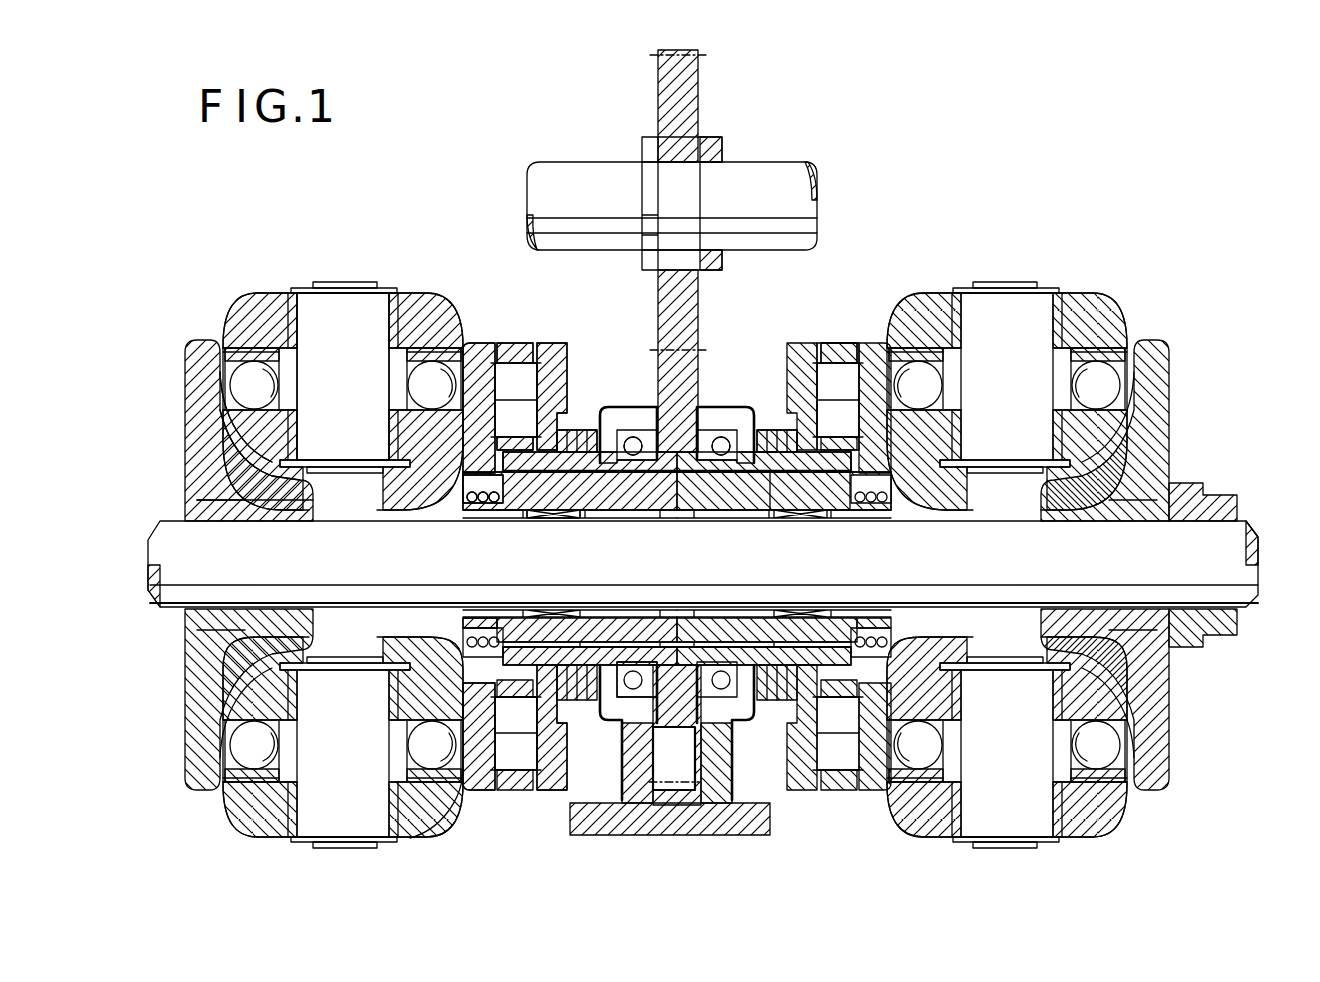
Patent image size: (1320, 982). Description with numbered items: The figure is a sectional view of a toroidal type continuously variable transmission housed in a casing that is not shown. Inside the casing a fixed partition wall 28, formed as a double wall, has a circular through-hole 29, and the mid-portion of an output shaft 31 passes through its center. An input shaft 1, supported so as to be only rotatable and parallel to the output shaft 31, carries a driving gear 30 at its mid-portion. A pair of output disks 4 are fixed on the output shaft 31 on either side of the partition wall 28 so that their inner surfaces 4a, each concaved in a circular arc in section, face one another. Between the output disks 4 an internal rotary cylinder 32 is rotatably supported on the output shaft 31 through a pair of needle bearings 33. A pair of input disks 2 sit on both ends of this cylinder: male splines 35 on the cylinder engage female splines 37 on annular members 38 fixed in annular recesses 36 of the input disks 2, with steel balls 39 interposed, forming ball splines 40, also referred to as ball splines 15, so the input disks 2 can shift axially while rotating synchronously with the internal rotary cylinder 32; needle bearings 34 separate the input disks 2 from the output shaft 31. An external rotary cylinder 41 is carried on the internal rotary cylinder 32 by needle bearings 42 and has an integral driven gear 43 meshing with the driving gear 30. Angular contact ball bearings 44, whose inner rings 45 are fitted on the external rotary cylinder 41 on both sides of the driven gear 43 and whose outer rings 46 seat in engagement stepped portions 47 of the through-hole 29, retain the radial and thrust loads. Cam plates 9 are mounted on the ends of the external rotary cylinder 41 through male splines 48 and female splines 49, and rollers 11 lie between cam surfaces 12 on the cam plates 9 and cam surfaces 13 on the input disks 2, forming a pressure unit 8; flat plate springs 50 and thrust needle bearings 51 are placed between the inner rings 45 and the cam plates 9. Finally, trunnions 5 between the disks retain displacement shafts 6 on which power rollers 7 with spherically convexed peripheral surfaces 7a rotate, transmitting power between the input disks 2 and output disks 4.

The input shaft 1 is at (600, 172).
The input disks 2 is at (868, 430).
The output disks 4 is at (206, 352).
The inner surfaces 4a is at (250, 483).
The trunnions 5 is at (424, 294).
The displacement shafts 6 is at (342, 300).
The power rollers 7 is at (226, 422).
The spherically convexed peripheral surfaces 7a is at (244, 472).
The pressure unit 8 is at (854, 292).
The cam plates 9 is at (552, 360).
The rollers 11 is at (512, 400).
The cam surface 12 is at (512, 770).
The cam surface 13 is at (506, 348).
The ball splines 15 is at (850, 505).
The partition wall 28 is at (680, 782).
The through-hole 29 is at (700, 404).
The driving gear 30 is at (692, 102).
The output shaft 31 is at (186, 596).
The internal rotary cylinder 32 is at (770, 480).
The needle bearings 33 is at (562, 508).
The needle bearings 34 is at (476, 482).
The male splines 35 is at (816, 350).
The annular recesses 36 is at (428, 792).
The female splines 37 is at (497, 352).
The annular members 38 is at (878, 362).
The steel balls 39 is at (494, 504).
The ball splines 40 is at (500, 510).
The external rotary cylinder 41 is at (720, 650).
The needle bearings 42 is at (612, 702).
The driven gear 43 is at (661, 838).
The angular contact ball bearings 44 is at (568, 392).
The inner rings 45 is at (724, 437).
The outer rings 46 is at (636, 437).
The engagement stepped portions 47 is at (617, 430).
The male splines 48 is at (547, 400).
The female splines 49 is at (792, 516).
The flat plate springs 50 is at (772, 440).
The thrust needle bearings 51 is at (777, 440).